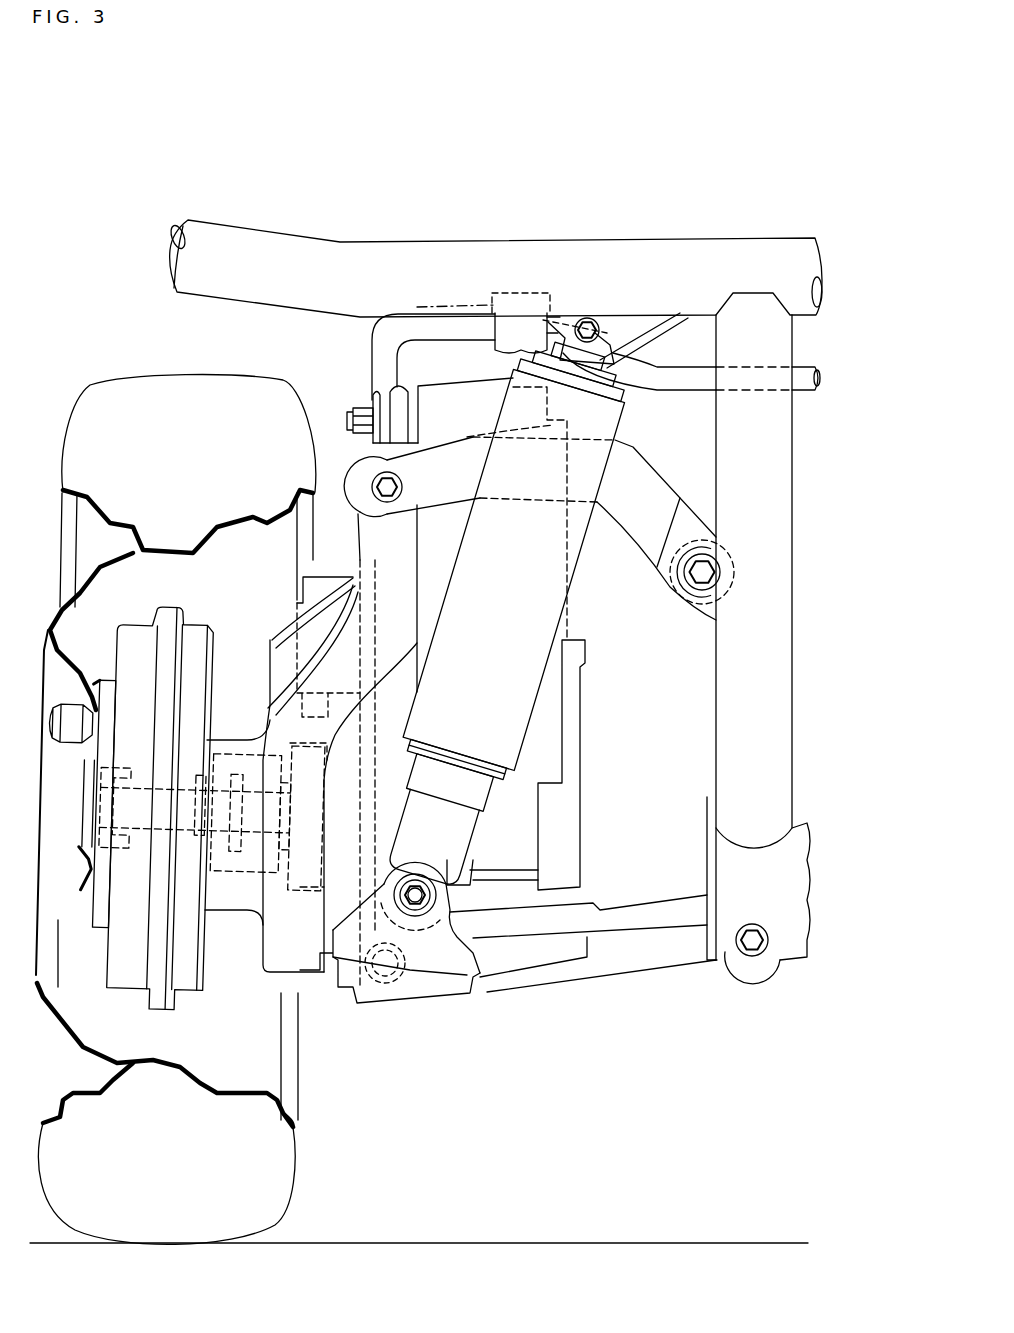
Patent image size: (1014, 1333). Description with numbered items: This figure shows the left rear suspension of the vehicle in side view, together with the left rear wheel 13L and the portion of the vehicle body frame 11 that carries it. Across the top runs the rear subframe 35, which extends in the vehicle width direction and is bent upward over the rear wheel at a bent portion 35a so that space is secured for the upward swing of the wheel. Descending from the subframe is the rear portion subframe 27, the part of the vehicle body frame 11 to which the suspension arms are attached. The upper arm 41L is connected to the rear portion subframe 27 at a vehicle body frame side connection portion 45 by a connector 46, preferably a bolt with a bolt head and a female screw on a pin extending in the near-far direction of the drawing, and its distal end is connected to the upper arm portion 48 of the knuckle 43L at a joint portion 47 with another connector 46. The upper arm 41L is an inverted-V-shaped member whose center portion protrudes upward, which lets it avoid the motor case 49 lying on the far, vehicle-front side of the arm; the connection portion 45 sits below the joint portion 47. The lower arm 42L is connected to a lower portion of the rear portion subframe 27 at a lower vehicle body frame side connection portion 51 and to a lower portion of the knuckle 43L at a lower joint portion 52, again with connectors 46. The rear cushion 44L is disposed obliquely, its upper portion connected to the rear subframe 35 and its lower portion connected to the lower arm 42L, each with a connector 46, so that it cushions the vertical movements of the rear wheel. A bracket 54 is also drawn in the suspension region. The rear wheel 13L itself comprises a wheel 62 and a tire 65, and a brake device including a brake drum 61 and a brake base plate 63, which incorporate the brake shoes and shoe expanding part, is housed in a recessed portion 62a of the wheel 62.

The vehicle body frame 11 is at (729, 228).
The left rear wheel 13L is at (101, 372).
The rear portion subframe 27 is at (763, 743).
The rear subframe 35 is at (597, 263).
The bent portion 35a is at (357, 280).
The upper arm 41L is at (650, 490).
The lower arm 42L is at (632, 975).
The knuckle 43L is at (303, 940).
The rear cushion 44L is at (535, 583).
The vehicle body frame side connection portion 45 is at (704, 538).
The connector 46 is at (587, 320).
The joint portion 47 is at (372, 410).
The upper arm portion 48 is at (370, 533).
The motor case 49 is at (459, 403).
The lower vehicle body frame side connection portion 51 is at (757, 968).
The lower joint portion 52 is at (400, 977).
The stopper bracket 54 is at (583, 743).
The brake drum 61 is at (115, 990).
The wheel 62 is at (47, 630).
The recessed portion 62a is at (250, 1087).
The brake base plate 63 is at (187, 990).
The tire 65 is at (60, 450).